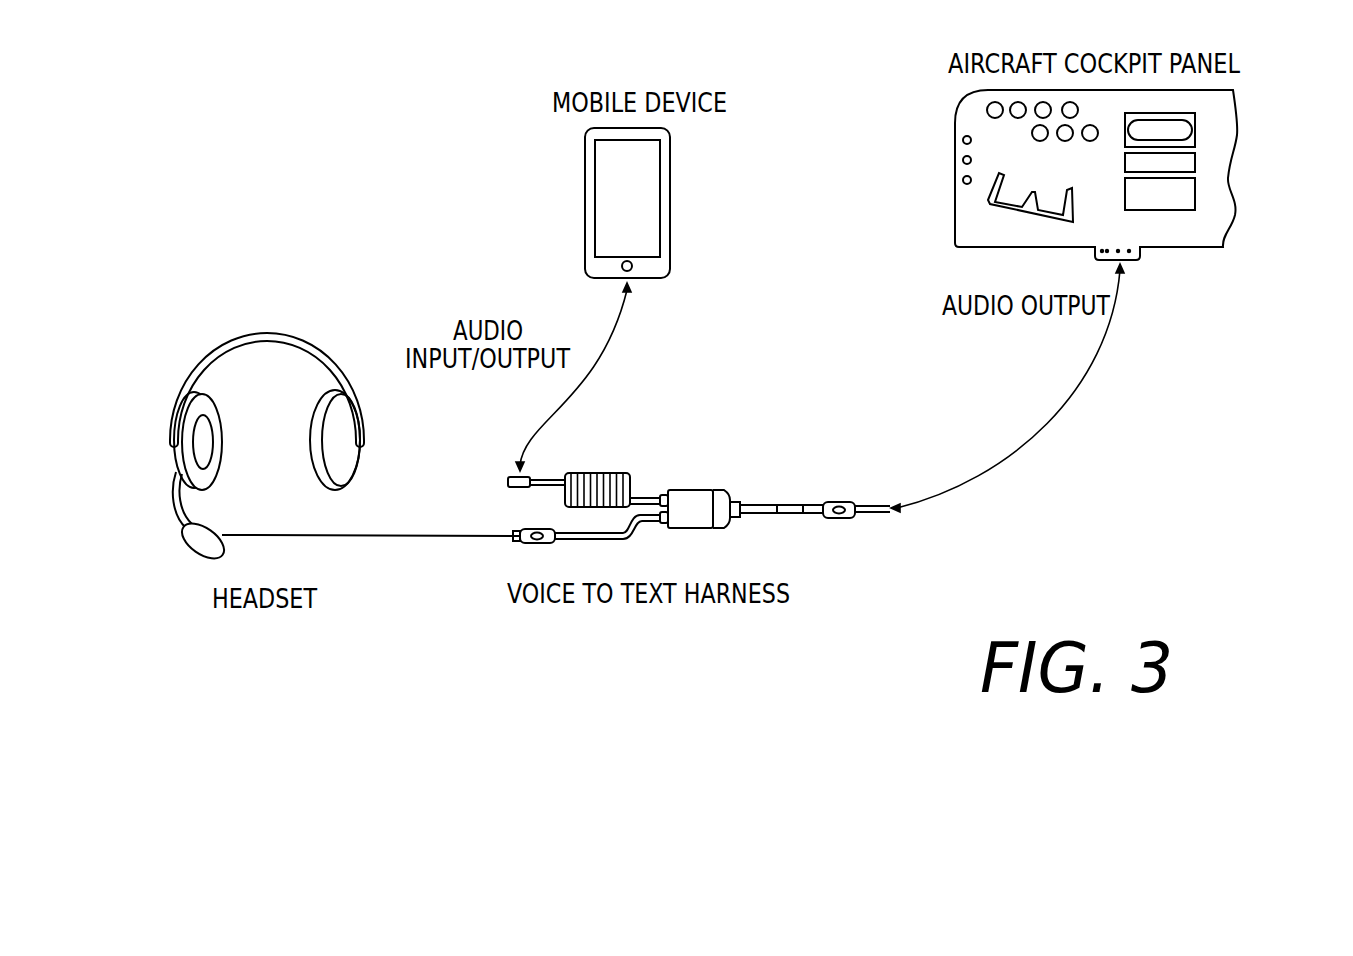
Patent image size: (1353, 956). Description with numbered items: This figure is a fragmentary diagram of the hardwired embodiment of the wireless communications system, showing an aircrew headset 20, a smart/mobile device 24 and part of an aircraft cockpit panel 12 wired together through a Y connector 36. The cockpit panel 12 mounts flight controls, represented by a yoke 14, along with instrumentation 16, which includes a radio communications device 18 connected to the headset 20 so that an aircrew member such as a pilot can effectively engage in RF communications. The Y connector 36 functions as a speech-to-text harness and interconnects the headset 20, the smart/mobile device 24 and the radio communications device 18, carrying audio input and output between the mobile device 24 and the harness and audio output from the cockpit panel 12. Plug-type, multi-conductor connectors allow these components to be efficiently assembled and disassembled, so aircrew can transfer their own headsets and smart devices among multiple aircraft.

The cockpit panel 12 is at (1226, 105).
The yoke 14 is at (988, 200).
The instrumentation 16 is at (1032, 133).
The radio communications device 18 is at (1193, 118).
The headset 20 is at (172, 395).
The smart/mobile device 24 is at (585, 177).
The Y connector 36 is at (693, 490).